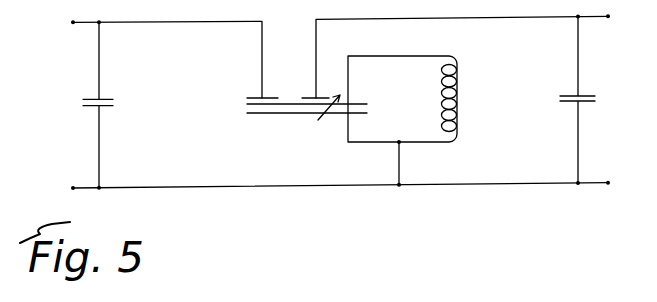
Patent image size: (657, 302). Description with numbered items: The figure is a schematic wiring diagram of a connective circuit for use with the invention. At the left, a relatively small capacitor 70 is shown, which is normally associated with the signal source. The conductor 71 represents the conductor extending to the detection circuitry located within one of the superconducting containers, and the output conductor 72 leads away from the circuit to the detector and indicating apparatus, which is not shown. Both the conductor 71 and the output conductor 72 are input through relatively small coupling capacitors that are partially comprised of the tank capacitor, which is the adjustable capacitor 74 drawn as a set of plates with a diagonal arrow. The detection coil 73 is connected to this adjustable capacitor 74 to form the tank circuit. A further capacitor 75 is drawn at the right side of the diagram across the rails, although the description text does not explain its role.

The small capacitor 70 is at (93, 97).
The conductor 71 is at (262, 57).
The output conductor 72 is at (316, 48).
The detection coil 73 is at (458, 70).
The adjustable capacitor 74 is at (258, 116).
The capacitor 75 is at (588, 95).